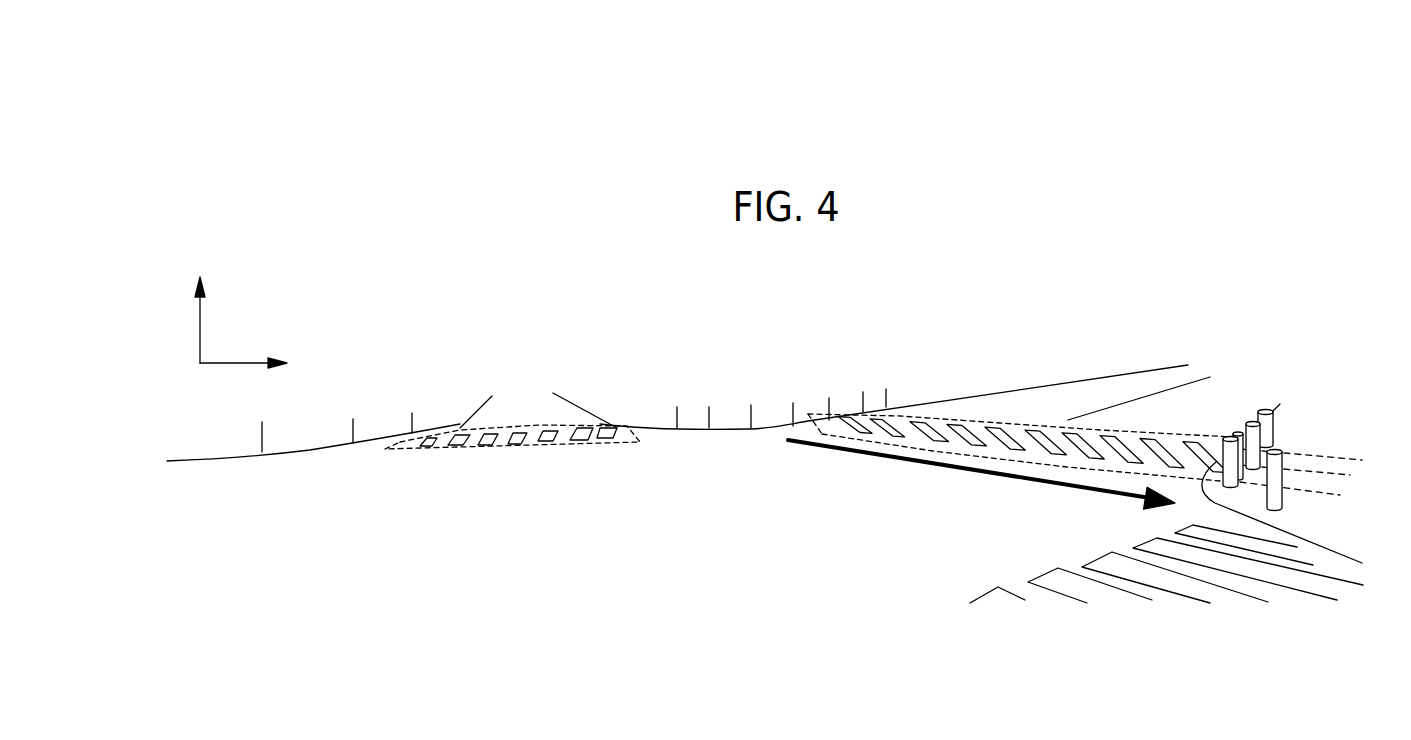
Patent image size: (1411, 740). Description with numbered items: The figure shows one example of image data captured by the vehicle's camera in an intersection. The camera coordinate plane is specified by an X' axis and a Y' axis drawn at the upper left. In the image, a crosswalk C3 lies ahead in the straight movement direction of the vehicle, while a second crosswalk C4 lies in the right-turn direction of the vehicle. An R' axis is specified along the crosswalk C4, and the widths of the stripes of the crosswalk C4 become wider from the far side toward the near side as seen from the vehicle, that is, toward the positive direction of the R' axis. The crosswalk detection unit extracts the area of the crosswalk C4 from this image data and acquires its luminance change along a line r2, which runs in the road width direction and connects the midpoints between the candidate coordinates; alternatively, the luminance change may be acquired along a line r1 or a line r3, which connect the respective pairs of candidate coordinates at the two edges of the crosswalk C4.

The crosswalk C3 is at (538, 447).
The crosswalk C4 is at (1050, 420).
The R' axis R' is at (981, 476).
The line r1 is at (1306, 499).
The line r2 is at (1309, 474).
The line r3 is at (1315, 459).
The X' axis X' is at (256, 366).
The Y' axis Y' is at (202, 304).